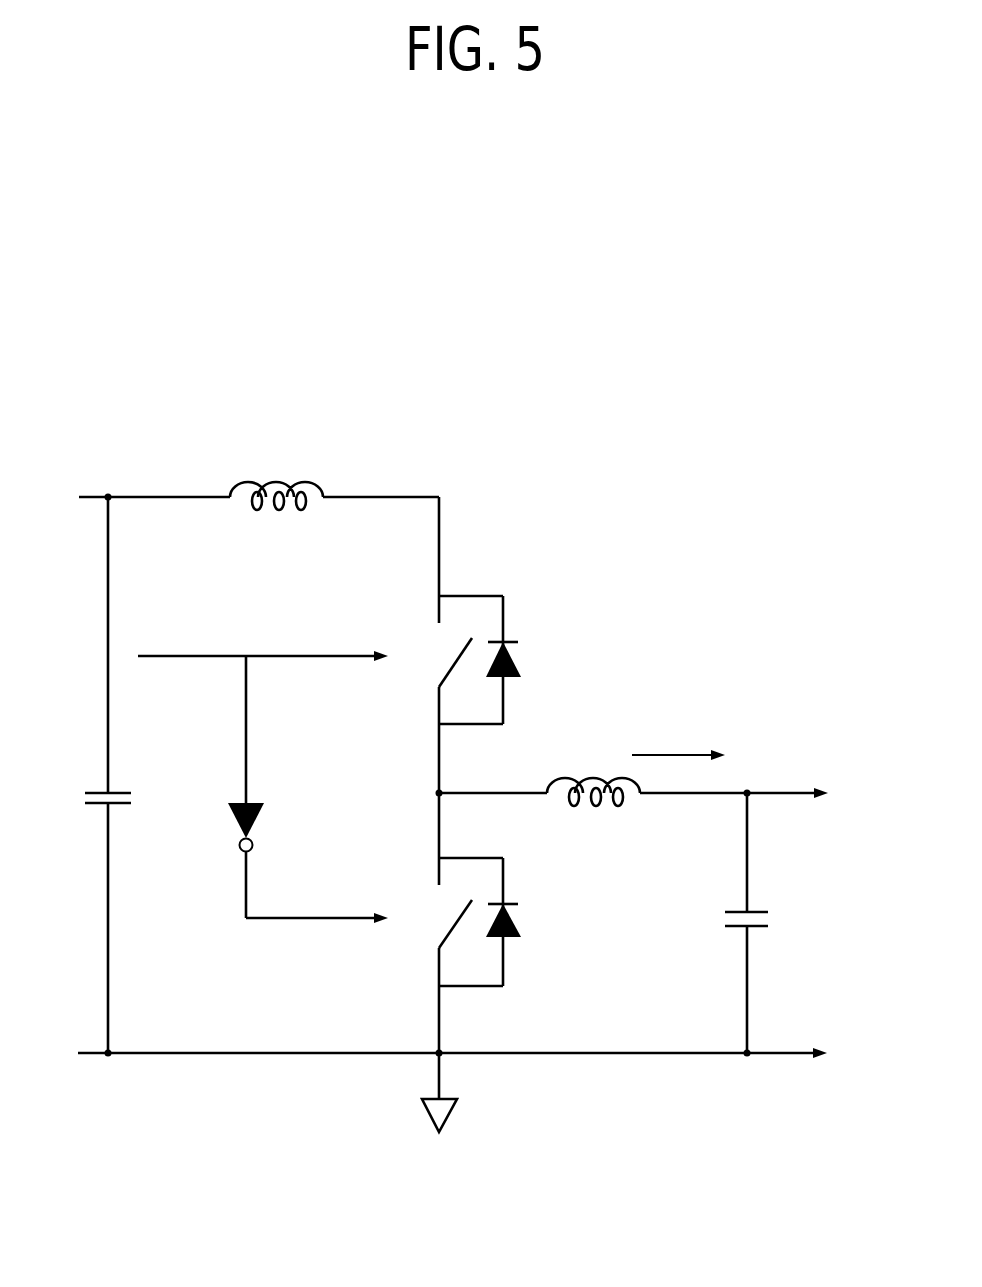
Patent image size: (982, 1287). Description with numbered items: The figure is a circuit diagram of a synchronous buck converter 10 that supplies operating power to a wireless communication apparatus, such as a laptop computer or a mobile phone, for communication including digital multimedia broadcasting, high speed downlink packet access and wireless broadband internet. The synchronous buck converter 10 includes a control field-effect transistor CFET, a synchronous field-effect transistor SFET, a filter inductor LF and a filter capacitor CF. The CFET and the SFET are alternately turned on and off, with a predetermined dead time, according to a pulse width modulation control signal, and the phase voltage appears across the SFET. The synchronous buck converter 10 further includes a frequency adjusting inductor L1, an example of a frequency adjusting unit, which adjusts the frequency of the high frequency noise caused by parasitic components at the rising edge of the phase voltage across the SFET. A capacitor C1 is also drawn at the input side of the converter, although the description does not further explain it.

The synchronous buck converter 10 is at (655, 494).
The frequency adjusting inductor L1 is at (276, 476).
The input capacitor C1 is at (88, 799).
The control field-effect transistor CFET is at (439, 698).
The synchronous field-effect transistor SFET is at (439, 962).
The filter inductor LF is at (593, 776).
The filter capacitor CF is at (765, 921).